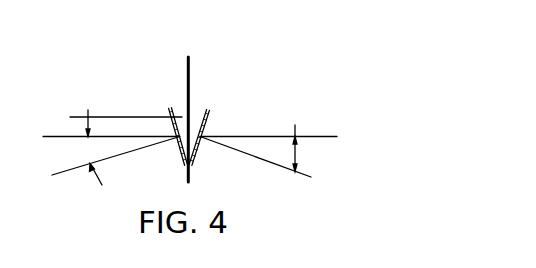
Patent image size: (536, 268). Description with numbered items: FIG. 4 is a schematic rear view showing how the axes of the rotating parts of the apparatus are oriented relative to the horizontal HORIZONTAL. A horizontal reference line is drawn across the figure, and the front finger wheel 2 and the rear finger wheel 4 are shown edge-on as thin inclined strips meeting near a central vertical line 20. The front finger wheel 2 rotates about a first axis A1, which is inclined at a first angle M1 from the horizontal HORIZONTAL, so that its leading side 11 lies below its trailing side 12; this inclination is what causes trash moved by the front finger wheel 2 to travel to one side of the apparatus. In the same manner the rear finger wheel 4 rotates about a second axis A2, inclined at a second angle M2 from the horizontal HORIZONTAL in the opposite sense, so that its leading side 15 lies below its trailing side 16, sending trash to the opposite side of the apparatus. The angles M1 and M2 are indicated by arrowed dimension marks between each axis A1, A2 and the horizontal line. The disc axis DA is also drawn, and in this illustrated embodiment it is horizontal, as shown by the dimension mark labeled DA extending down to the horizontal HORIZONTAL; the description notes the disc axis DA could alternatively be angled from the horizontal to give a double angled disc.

The center line / blade plane 20 is at (188, 57).
The trailing side 16 is at (172, 110).
The leading side 15 is at (170, 109).
The rear finger wheel 4 is at (182, 150).
The trailing side 12 is at (207, 111).
The leading side 11 is at (210, 113).
The front finger wheel 2 is at (193, 158).
The disc axis DA is at (111, 120).
The first axis A1 is at (271, 166).
The second axis A2 is at (102, 163).
The first angle M1 is at (298, 138).
The second angle M2 is at (88, 162).
The horizontal HORIZONTAL is at (248, 152).